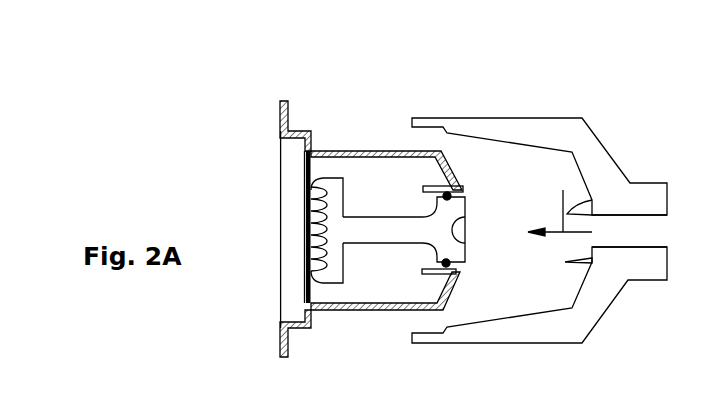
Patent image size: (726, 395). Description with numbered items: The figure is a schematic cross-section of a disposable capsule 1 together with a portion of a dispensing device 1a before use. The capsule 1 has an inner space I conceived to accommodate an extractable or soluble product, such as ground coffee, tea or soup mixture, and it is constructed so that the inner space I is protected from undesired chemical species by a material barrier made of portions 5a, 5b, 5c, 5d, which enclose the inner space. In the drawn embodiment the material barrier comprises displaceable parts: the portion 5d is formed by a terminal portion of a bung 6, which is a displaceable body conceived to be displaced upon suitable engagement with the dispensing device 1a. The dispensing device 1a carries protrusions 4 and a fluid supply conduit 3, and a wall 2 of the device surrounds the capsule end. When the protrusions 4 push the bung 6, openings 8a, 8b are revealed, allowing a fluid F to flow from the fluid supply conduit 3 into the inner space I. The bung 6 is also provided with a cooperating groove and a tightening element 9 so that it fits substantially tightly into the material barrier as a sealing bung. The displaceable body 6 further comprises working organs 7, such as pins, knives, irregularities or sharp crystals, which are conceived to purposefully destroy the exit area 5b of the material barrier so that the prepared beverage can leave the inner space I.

The disposable capsule 1 is at (309, 111).
The dispensing device 1a is at (539, 197).
The housing wall 2 is at (583, 137).
The fluid supply conduit 3 is at (645, 215).
The protrusions 4 is at (570, 259).
The material barrier portion 5a is at (342, 151).
The exit area 5b is at (306, 266).
The material barrier portion 5c is at (348, 311).
The material barrier portion 5d is at (465, 205).
The bung 6 is at (360, 230).
The working organs 7 is at (312, 184).
The opening 8a is at (434, 184).
The opening 8b is at (427, 275).
The tightening element 9 is at (455, 266).
The inner space I is at (405, 168).
The fluid F is at (560, 202).